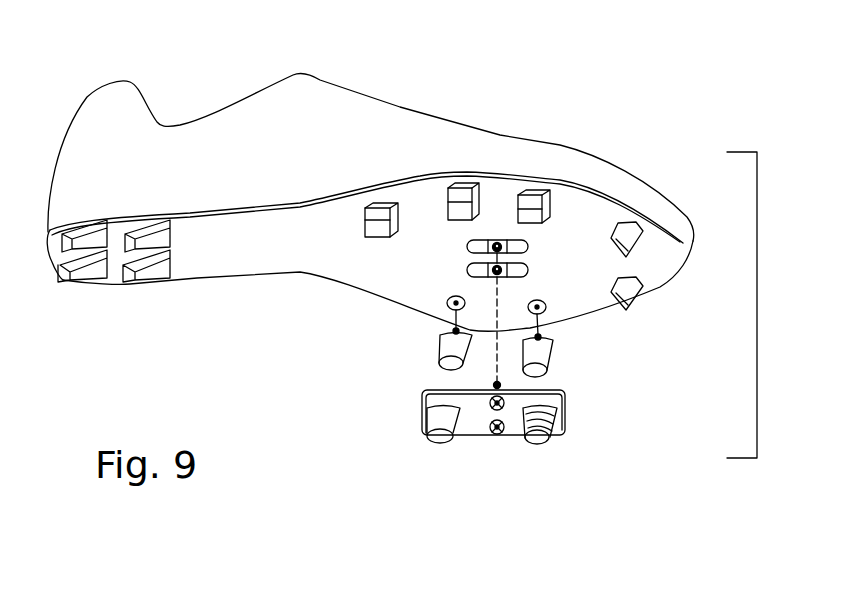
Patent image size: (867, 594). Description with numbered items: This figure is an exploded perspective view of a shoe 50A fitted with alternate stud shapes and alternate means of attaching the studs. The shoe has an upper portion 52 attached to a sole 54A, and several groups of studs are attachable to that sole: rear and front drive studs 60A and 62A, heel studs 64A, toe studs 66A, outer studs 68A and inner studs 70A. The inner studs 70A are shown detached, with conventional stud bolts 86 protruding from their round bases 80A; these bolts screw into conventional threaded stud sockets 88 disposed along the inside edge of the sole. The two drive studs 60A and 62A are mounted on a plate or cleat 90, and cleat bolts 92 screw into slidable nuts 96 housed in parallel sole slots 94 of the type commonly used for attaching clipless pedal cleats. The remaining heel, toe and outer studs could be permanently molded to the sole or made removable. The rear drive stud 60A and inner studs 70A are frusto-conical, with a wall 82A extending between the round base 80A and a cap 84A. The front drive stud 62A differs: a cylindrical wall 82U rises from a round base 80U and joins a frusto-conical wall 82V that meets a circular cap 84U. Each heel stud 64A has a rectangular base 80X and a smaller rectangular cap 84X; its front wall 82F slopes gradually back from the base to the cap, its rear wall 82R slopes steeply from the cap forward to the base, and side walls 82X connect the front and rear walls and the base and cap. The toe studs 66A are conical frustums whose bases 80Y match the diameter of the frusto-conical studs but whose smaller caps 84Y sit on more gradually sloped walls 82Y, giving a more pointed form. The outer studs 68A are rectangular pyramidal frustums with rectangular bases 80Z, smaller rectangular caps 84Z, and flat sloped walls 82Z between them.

The shoe 50A is at (390, 86).
The upper portion 52 is at (283, 133).
The sole 54A is at (288, 237).
The rear drive stud 60A is at (438, 445).
The front drive stud 62A is at (533, 440).
The heel studs 64A is at (73, 280).
The toe studs 66A is at (630, 295).
The outer studs 68A is at (533, 200).
The inner studs 70A is at (447, 348).
The rectangular base 80X is at (165, 232).
The side walls 82X is at (130, 230).
The rear wall 82R is at (128, 230).
The front wall 82F is at (157, 237).
The rectangular cap 84X is at (119, 268).
The rectangular base 80Z is at (383, 205).
The sloped walls 82Z is at (380, 215).
The rectangular cap 84Z is at (375, 233).
The toe-stud base 80Y is at (622, 222).
The sloped walls 82Y is at (618, 240).
The cap 84Y is at (628, 252).
The round base 80A is at (540, 337).
The wall 82A is at (537, 353).
The cap 84A is at (540, 368).
The round base 80U is at (550, 408).
The cylindrical wall 82U is at (555, 433).
The frusto-conical wall 82V is at (560, 432).
The circular cap 84U is at (543, 435).
The stud bolts 86 is at (452, 332).
The threaded stud sockets 88 is at (447, 300).
The plate or cleat 90 is at (458, 440).
The cleat bolts 92 is at (495, 437).
The parallel sole slots 94 is at (517, 250).
The slidable nuts 96 is at (467, 242).